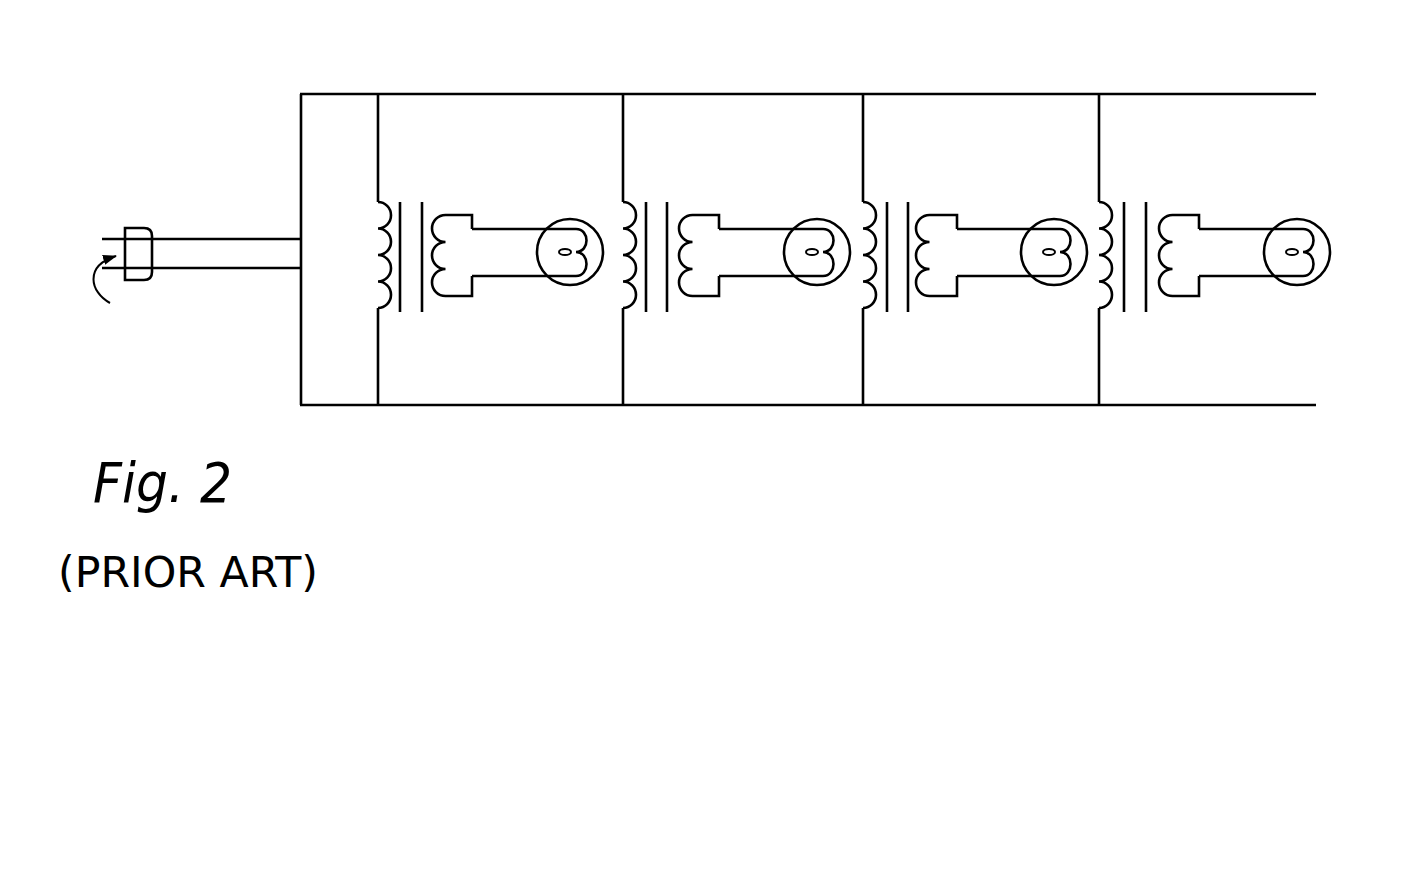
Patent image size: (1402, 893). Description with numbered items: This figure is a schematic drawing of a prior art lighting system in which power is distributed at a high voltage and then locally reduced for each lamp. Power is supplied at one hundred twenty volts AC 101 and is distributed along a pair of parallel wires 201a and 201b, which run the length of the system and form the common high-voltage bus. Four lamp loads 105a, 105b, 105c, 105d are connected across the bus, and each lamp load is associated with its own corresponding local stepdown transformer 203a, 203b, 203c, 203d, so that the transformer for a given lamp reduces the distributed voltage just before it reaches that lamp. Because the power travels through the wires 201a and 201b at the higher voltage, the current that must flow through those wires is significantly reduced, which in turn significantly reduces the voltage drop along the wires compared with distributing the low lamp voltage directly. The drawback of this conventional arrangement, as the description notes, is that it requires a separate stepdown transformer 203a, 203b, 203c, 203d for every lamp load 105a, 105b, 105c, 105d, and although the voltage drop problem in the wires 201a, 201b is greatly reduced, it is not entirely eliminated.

The 120 volts AC power supply 101 is at (111, 232).
The lamp load 105a is at (578, 214).
The lamp load 105b is at (828, 217).
The lamp load 105c is at (1047, 215).
The lamp load 105d is at (1368, 218).
The parallel wire 201a is at (390, 72).
The parallel wire 201b is at (352, 406).
The local stepdown transformer 203a is at (413, 318).
The local stepdown transformer 203b is at (653, 315).
The local stepdown transformer 203c is at (897, 313).
The local stepdown transformer 203d is at (1132, 313).